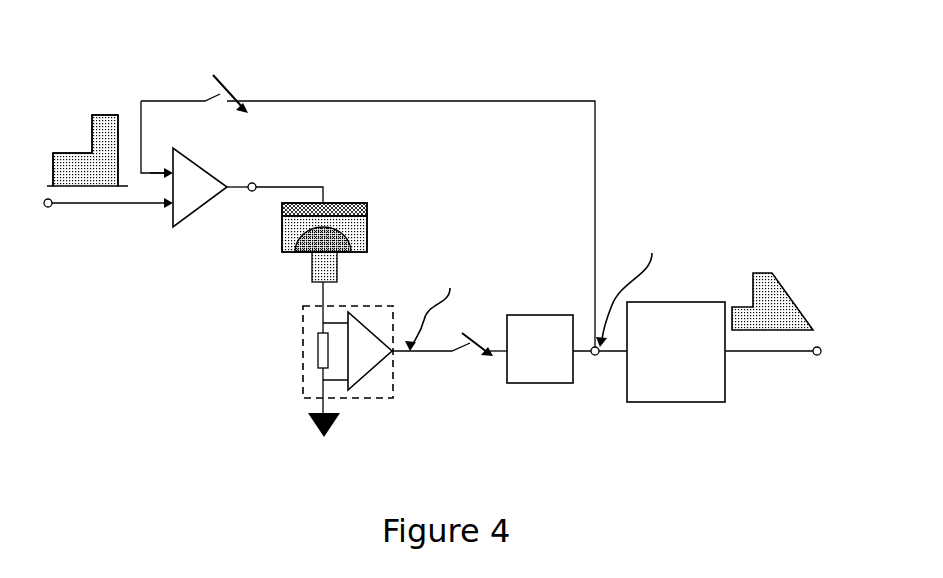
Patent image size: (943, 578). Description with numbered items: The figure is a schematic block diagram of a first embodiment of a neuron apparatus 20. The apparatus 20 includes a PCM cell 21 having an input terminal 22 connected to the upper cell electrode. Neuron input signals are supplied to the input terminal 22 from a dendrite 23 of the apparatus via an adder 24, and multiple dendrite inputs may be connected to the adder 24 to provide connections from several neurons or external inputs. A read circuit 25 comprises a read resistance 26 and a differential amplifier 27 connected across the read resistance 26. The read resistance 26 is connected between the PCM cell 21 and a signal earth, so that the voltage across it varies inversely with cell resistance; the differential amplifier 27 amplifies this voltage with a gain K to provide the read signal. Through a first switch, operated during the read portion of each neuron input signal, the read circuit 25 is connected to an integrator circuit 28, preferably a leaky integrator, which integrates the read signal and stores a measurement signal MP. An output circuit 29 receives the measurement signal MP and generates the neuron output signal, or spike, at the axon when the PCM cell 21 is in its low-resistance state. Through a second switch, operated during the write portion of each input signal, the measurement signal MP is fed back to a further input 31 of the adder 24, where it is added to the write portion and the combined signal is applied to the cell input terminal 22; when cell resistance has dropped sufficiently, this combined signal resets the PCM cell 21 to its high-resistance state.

The neuron apparatus 20 is at (684, 84).
The PCM cell 21 is at (367, 213).
The input terminal 22 is at (256, 186).
The dendrite 23 is at (160, 206).
The adder 24 is at (201, 204).
The read circuit 25 is at (303, 320).
The read resistance 26 is at (308, 350).
The differential amplifier 27 is at (354, 389).
The integrator circuit 28 is at (525, 315).
The output circuit 29 is at (664, 389).
The further input 31 is at (158, 170).